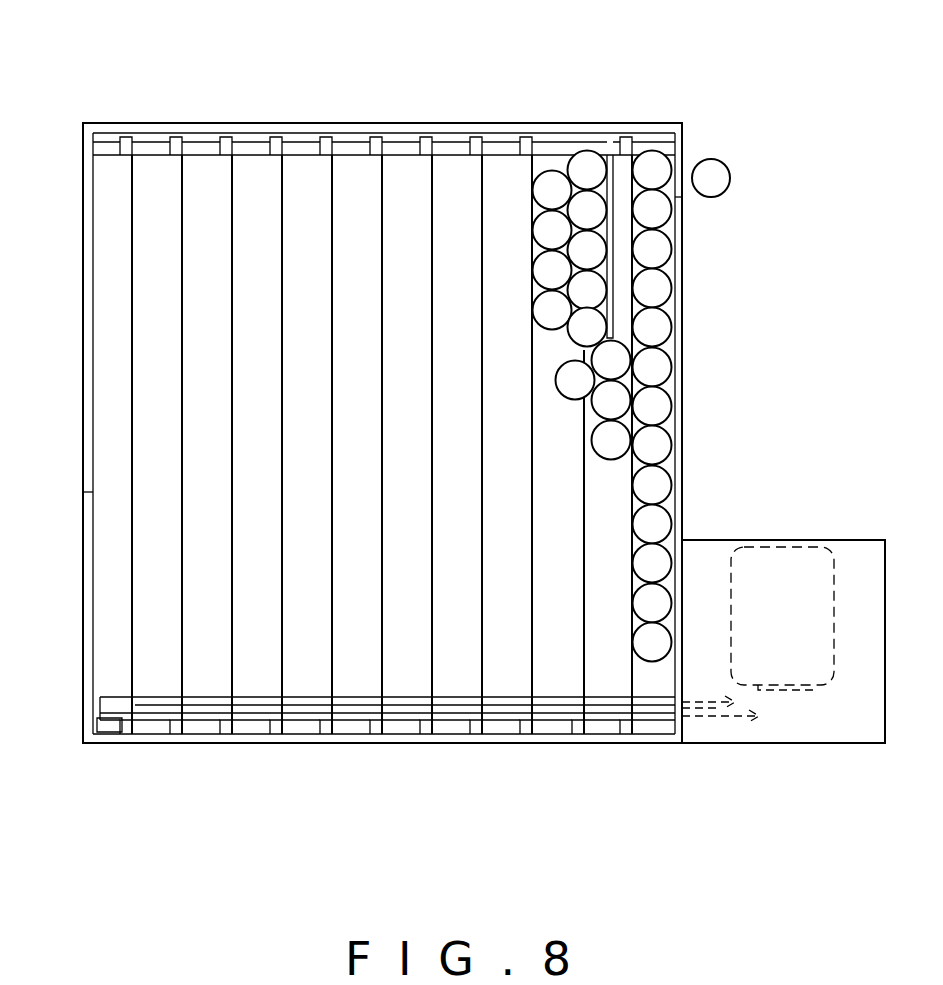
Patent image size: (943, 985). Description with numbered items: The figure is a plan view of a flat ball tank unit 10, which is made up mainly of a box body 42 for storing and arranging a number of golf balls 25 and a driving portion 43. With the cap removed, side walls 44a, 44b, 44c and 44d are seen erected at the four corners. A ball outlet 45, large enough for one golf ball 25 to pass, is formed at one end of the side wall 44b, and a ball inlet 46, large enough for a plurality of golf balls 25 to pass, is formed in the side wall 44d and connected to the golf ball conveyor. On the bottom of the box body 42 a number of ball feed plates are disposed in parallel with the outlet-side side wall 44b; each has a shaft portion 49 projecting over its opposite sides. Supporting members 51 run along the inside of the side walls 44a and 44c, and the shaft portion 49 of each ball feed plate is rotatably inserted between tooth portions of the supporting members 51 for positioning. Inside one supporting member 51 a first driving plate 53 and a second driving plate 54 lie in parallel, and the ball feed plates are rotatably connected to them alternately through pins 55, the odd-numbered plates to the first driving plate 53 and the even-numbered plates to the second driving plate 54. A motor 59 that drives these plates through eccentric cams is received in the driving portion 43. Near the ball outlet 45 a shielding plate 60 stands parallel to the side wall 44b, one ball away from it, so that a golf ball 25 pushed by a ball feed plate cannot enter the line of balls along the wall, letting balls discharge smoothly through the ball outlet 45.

The flat ball tank unit 10 is at (480, 108).
The golf ball 25 is at (550, 190).
The box body 42 is at (372, 397).
The driving portion 43 is at (847, 550).
The side wall 44a is at (350, 128).
The side wall 44b is at (682, 362).
The side wall 44c is at (402, 730).
The side wall 44d is at (92, 328).
The ball outlet 45 is at (675, 152).
The ball inlet 46 is at (92, 590).
The shaft portion 49 is at (428, 145).
The supporting member 51 is at (400, 137).
The first driving plate 53 is at (162, 715).
The second driving plate 54 is at (213, 703).
The pin 55 is at (100, 697).
The motor 59 is at (760, 567).
The shielding plate 60 is at (615, 242).